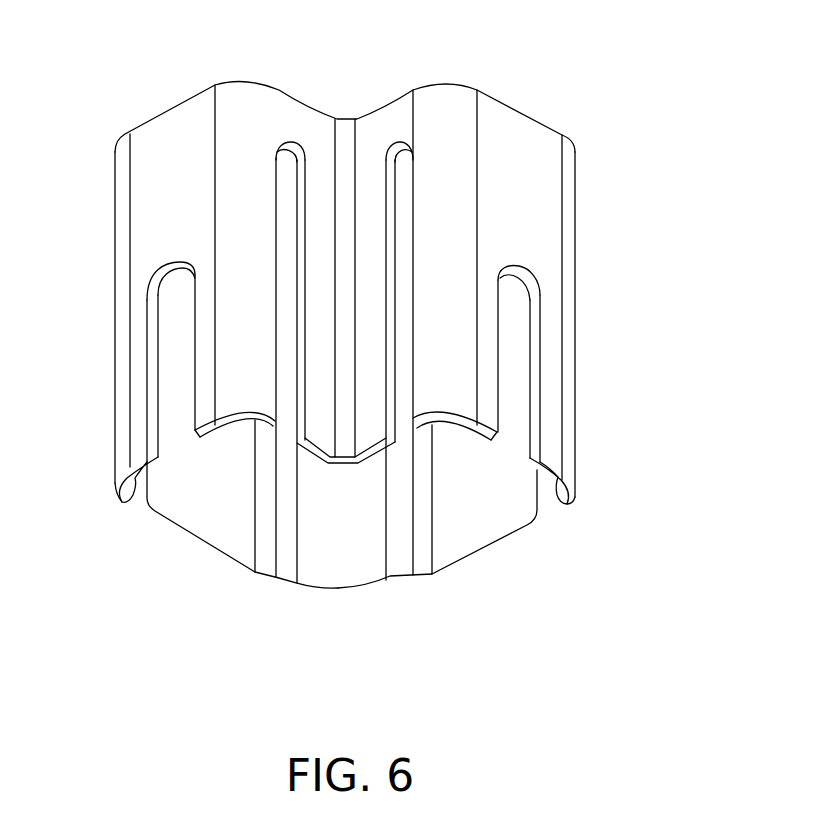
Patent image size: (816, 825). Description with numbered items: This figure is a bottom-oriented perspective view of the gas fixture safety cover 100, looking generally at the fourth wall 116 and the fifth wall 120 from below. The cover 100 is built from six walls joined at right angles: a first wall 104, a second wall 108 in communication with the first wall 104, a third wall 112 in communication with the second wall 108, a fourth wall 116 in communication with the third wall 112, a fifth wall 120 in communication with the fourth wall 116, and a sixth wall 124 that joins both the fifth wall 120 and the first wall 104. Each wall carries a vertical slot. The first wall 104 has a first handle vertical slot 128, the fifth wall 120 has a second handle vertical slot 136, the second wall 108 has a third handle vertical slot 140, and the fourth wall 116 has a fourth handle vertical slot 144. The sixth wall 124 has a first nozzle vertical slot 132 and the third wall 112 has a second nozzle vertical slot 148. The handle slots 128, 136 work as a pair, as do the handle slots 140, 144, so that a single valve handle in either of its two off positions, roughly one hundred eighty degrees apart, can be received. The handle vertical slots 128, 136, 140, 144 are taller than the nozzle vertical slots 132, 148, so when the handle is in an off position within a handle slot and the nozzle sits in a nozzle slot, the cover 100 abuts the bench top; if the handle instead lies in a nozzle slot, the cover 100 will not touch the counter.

The gas fixture safety cover 100 is at (575, 280).
The first wall 104 is at (210, 552).
The second wall 108 is at (498, 538).
The third wall 112 is at (512, 155).
The fourth wall 116 is at (383, 122).
The fifth wall 120 is at (300, 120).
The sixth wall 124 is at (168, 223).
The first handle vertical slot 128 is at (138, 500).
The first nozzle vertical slot 132 is at (175, 373).
The second handle vertical slot 136 is at (283, 163).
The third handle vertical slot 140 is at (545, 505).
The fourth handle vertical slot 144 is at (388, 455).
The second nozzle vertical slot 148 is at (515, 367).